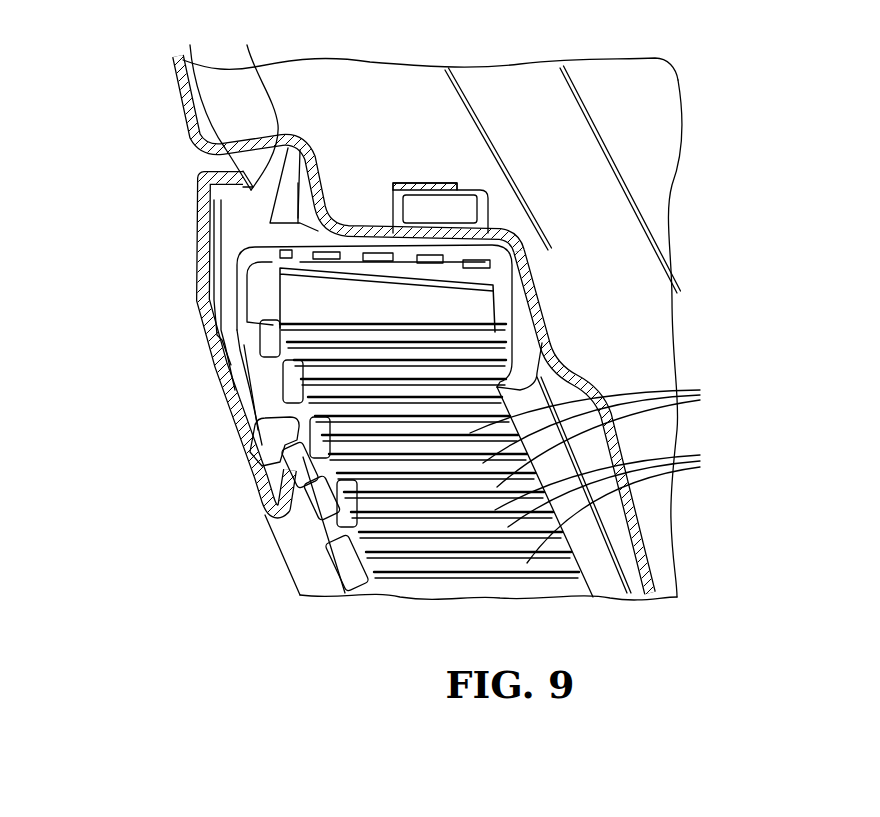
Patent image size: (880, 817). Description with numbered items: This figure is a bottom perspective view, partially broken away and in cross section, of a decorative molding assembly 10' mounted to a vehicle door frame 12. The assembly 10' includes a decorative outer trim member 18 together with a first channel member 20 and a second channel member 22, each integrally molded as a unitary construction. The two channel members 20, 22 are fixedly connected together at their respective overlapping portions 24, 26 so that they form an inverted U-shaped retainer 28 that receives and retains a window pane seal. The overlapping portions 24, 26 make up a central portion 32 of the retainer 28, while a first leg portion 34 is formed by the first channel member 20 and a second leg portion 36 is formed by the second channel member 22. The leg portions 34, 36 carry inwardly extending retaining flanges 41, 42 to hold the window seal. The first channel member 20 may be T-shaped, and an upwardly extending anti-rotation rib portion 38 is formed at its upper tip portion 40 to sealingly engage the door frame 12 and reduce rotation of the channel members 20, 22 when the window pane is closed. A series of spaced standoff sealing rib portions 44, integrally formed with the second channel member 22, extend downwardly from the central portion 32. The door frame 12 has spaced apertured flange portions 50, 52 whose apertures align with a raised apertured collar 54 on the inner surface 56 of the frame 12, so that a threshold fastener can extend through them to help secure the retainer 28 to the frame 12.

The decorative molding assembly 10' is at (439, 312).
The vehicle door frame 12 is at (178, 102).
The decorative outer trim member 18 is at (183, 294).
The first channel member 20 is at (220, 345).
The second channel member 22 is at (575, 442).
The overlapping portion 24 is at (330, 243).
The overlapping portion 26 is at (428, 275).
The U-shaped retainer 28 is at (445, 491).
The central portion 32 is at (402, 220).
The first leg portion 34 is at (274, 520).
The second leg portion 36 is at (540, 345).
The anti-rotation rib portion 38 is at (277, 125).
The upper tip portion 40 is at (214, 105).
The retaining flange 41 is at (255, 426).
The retaining flange 42 is at (510, 372).
The standoff sealing rib portions 44 is at (598, 471).
The apertured flange portion 50 is at (412, 183).
The apertured flange portion 52 is at (492, 205).
The raised apertured collar 54 is at (495, 216).
The inner surface 56 is at (368, 250).